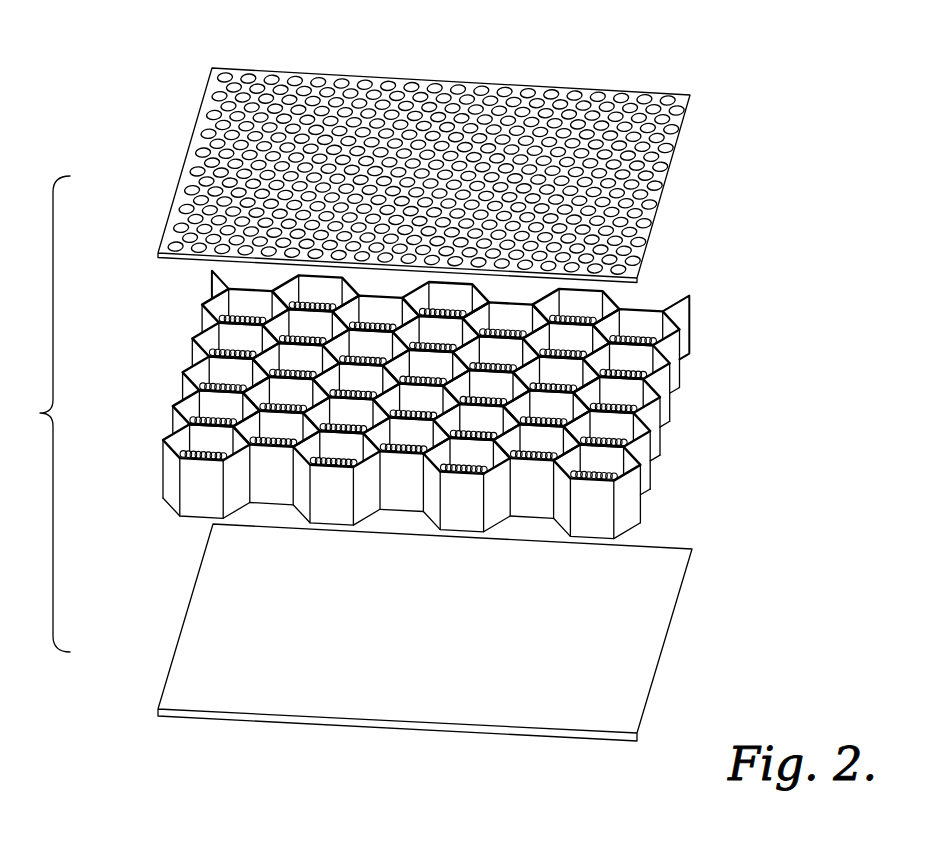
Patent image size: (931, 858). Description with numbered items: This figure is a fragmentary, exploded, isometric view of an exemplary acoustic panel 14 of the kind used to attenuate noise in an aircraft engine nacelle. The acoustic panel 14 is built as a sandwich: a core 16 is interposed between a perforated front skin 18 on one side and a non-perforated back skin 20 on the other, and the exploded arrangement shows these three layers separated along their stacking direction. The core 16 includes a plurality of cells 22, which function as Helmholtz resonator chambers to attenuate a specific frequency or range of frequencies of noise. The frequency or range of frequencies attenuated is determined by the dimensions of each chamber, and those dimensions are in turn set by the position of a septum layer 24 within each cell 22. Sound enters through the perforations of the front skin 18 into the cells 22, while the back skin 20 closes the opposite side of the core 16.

The acoustic panel 14 is at (689, 73).
The perforated front skin 18 is at (673, 145).
The core 16 is at (745, 312).
The cells 22 is at (662, 505).
The septum layer 24 is at (658, 388).
The non-perforated back skin 20 is at (672, 575).